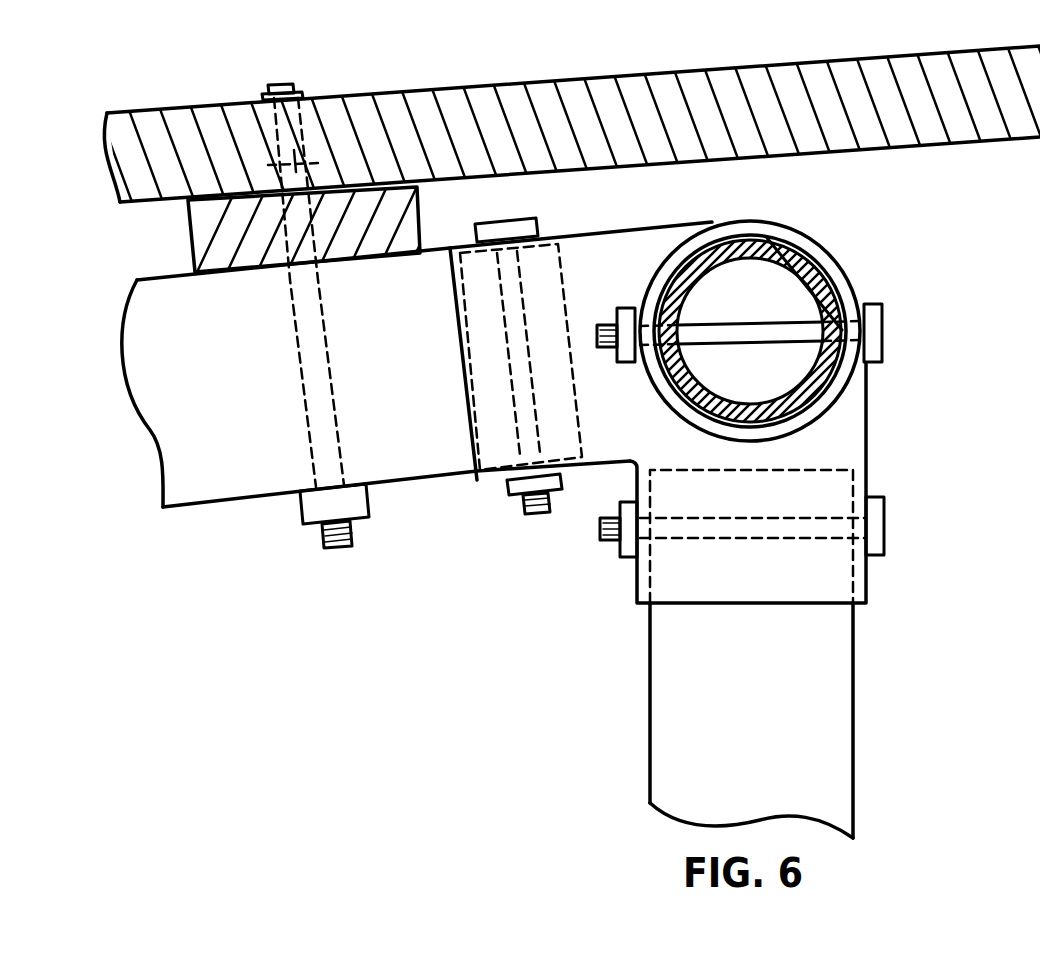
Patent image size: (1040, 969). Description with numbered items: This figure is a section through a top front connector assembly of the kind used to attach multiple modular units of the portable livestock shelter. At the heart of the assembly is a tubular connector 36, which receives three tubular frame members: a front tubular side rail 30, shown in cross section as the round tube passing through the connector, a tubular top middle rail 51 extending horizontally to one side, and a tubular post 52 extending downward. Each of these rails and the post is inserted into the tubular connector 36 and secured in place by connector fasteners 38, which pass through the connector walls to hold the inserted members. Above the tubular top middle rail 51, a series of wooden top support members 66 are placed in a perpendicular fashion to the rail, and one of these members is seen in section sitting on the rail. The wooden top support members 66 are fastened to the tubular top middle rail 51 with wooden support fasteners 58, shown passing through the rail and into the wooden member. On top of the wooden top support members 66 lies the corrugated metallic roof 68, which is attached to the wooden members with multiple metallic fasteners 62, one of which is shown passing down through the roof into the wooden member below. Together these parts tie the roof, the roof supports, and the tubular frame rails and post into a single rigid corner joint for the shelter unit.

The front tubular side rail 30 is at (823, 287).
The tubular connector 36 is at (773, 230).
The connector fasteners 38 is at (877, 527).
The tubular top middle rail 51 is at (210, 478).
The tubular post 52 is at (683, 713).
The wooden support fasteners 58 is at (292, 160).
The metallic fasteners 62 is at (277, 84).
The wooden top support members 66 is at (200, 245).
The corrugated metallic roof 68 is at (707, 80).